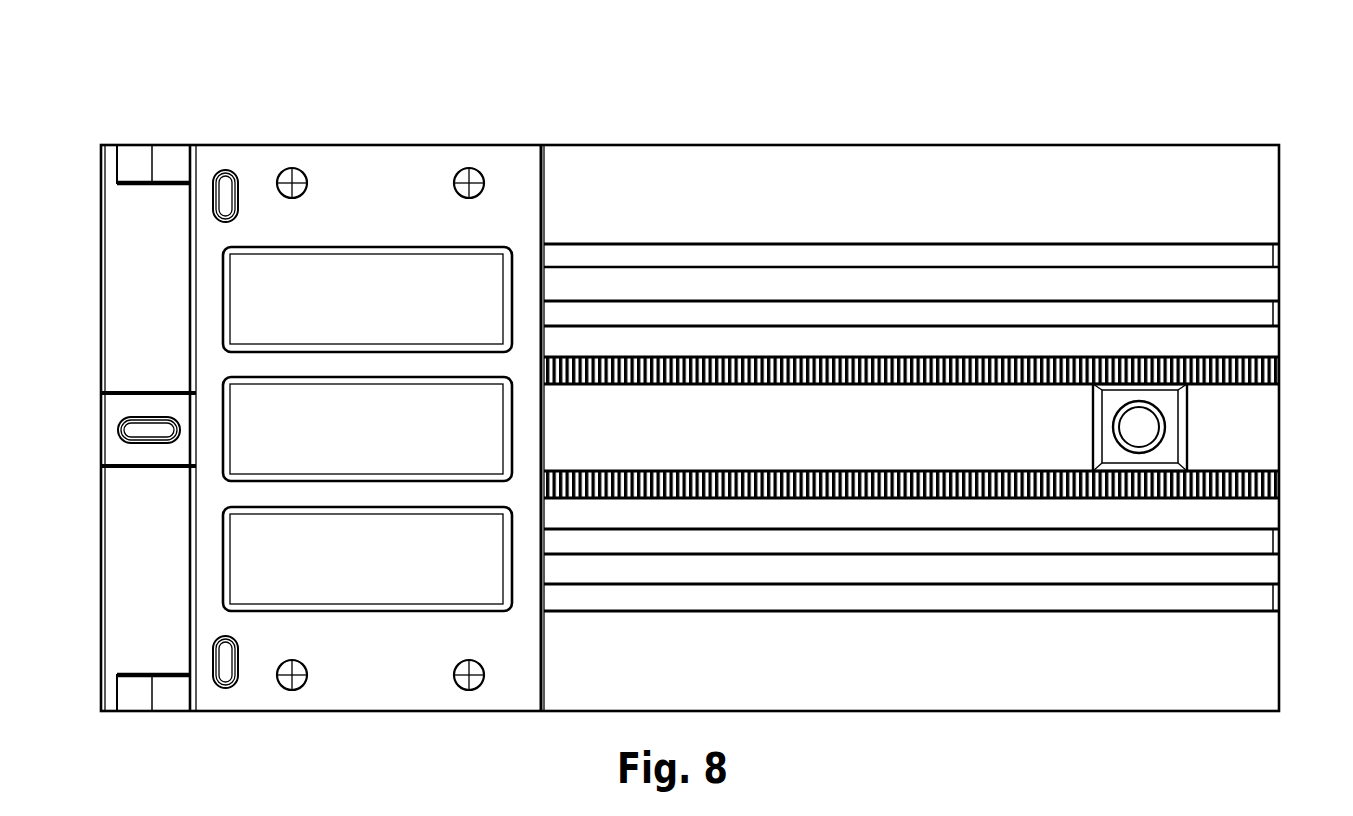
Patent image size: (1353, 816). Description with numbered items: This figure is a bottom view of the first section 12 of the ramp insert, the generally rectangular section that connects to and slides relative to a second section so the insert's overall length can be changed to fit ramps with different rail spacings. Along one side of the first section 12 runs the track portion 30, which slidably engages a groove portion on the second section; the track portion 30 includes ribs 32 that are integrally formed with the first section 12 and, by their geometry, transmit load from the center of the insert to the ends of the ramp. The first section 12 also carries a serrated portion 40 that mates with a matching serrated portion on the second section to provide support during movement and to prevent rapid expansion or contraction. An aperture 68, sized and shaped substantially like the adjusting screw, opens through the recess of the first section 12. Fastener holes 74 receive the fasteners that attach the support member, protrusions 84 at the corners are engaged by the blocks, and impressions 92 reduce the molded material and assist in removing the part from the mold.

The first section 12 is at (792, 101).
The track portion 30 is at (1084, 218).
The ribs 32 is at (1253, 317).
The serrated portion 40 is at (1280, 370).
The aperture 68 is at (1135, 435).
The fastener holes 74 is at (459, 170).
The protrusions 84 is at (136, 165).
The impressions 92 is at (270, 313).